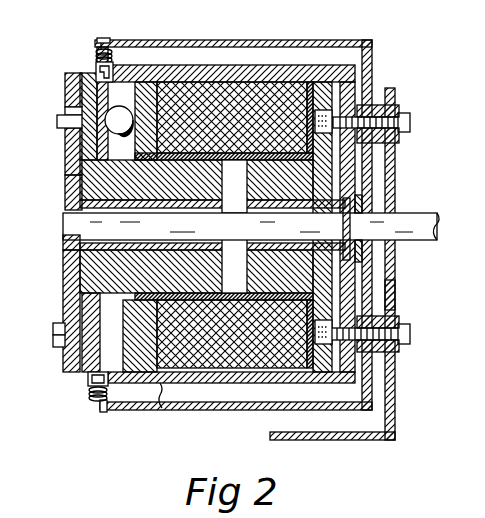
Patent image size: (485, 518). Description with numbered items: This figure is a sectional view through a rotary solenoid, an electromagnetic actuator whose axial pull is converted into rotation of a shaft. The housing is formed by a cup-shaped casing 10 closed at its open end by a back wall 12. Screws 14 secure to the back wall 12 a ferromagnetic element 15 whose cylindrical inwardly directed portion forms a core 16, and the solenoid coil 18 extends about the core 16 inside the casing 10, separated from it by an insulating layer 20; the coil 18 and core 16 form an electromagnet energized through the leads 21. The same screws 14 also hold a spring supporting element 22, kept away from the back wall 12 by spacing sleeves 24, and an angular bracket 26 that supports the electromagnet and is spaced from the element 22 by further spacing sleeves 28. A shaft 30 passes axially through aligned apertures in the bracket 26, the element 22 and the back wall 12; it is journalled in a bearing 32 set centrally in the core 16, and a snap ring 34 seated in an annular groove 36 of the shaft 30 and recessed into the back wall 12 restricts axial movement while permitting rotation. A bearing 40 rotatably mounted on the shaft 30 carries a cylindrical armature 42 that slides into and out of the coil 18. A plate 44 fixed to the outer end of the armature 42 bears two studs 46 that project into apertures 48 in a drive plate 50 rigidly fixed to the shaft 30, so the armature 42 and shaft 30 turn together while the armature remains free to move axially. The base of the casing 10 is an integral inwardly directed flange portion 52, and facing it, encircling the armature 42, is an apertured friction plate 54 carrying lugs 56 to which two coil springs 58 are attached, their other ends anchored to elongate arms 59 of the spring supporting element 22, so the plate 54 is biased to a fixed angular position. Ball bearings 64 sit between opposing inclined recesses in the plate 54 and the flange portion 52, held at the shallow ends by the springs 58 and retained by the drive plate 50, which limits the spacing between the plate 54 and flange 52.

The cup-shaped casing 10 is at (170, 68).
The back wall 12 is at (374, 72).
The screws 14 is at (410, 124).
The ferromagnetic element 15 is at (322, 95).
The core 16 is at (248, 207).
The solenoid coil 18 is at (239, 97).
The insulating layer 20 is at (263, 193).
The leads 21 is at (163, 413).
The spring supporting element 22 is at (372, 58).
The spacing sleeves 24 is at (362, 107).
The angular bracket 26 is at (387, 295).
The spacing sleeves 28 is at (399, 156).
The shaft 30 is at (68, 220).
The bearing 32 is at (350, 200).
The snap ring 34 is at (377, 265).
The annular groove 36 is at (352, 235).
The bearing 40 is at (77, 248).
The armature 42 is at (72, 279).
The plate 44 is at (80, 145).
The studs 46 is at (66, 110).
The apertures 48 is at (57, 125).
The drive plate 50 is at (68, 165).
The flange portion 52 is at (137, 80).
The friction plate 54 is at (67, 84).
The lugs 56 is at (95, 63).
The coil springs 58 is at (96, 56).
The arms 59 is at (101, 40).
The ball bearing 64 is at (118, 106).